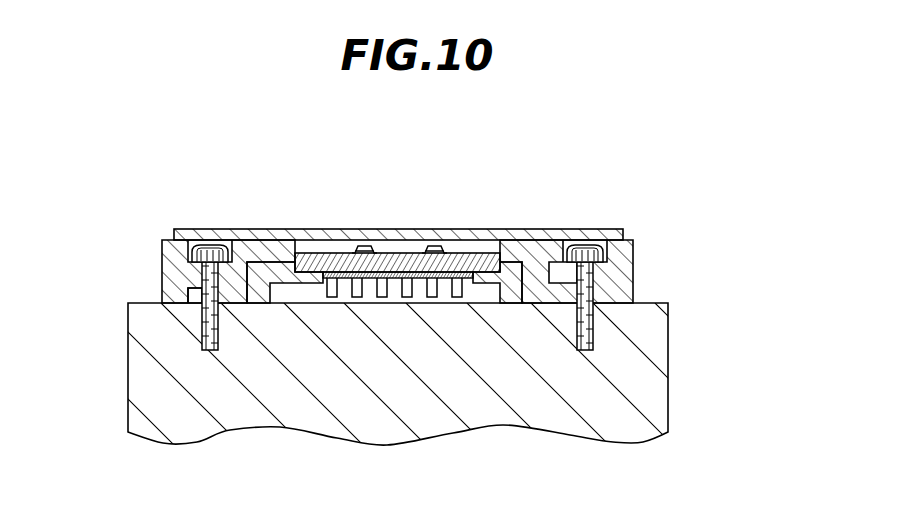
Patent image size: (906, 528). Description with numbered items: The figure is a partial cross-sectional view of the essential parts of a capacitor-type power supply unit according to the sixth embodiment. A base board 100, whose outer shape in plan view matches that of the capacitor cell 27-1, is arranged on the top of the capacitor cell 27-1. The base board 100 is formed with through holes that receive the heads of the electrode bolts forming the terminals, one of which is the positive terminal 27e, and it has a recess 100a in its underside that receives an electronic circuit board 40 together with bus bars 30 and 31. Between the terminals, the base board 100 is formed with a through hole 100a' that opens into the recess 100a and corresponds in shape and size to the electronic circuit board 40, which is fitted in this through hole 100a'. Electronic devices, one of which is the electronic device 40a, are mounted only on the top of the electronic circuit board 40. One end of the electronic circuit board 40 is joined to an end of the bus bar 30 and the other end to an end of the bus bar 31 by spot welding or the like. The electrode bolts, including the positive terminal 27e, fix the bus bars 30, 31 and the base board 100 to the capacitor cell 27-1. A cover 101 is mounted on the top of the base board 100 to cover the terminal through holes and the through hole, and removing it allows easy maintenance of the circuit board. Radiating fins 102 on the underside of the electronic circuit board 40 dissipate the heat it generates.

The capacitor cell 27-1 is at (650, 367).
The positive terminal 27e is at (190, 287).
The bus bar 30 is at (266, 268).
The bus bar 31 is at (537, 246).
The electronic circuit board 40 is at (470, 258).
The electronic device 40a is at (371, 245).
The base board 100 is at (632, 238).
The recess 100a is at (378, 376).
The through hole 100a' is at (438, 196).
The cover 101 is at (226, 238).
The radiating fins 102 is at (430, 278).